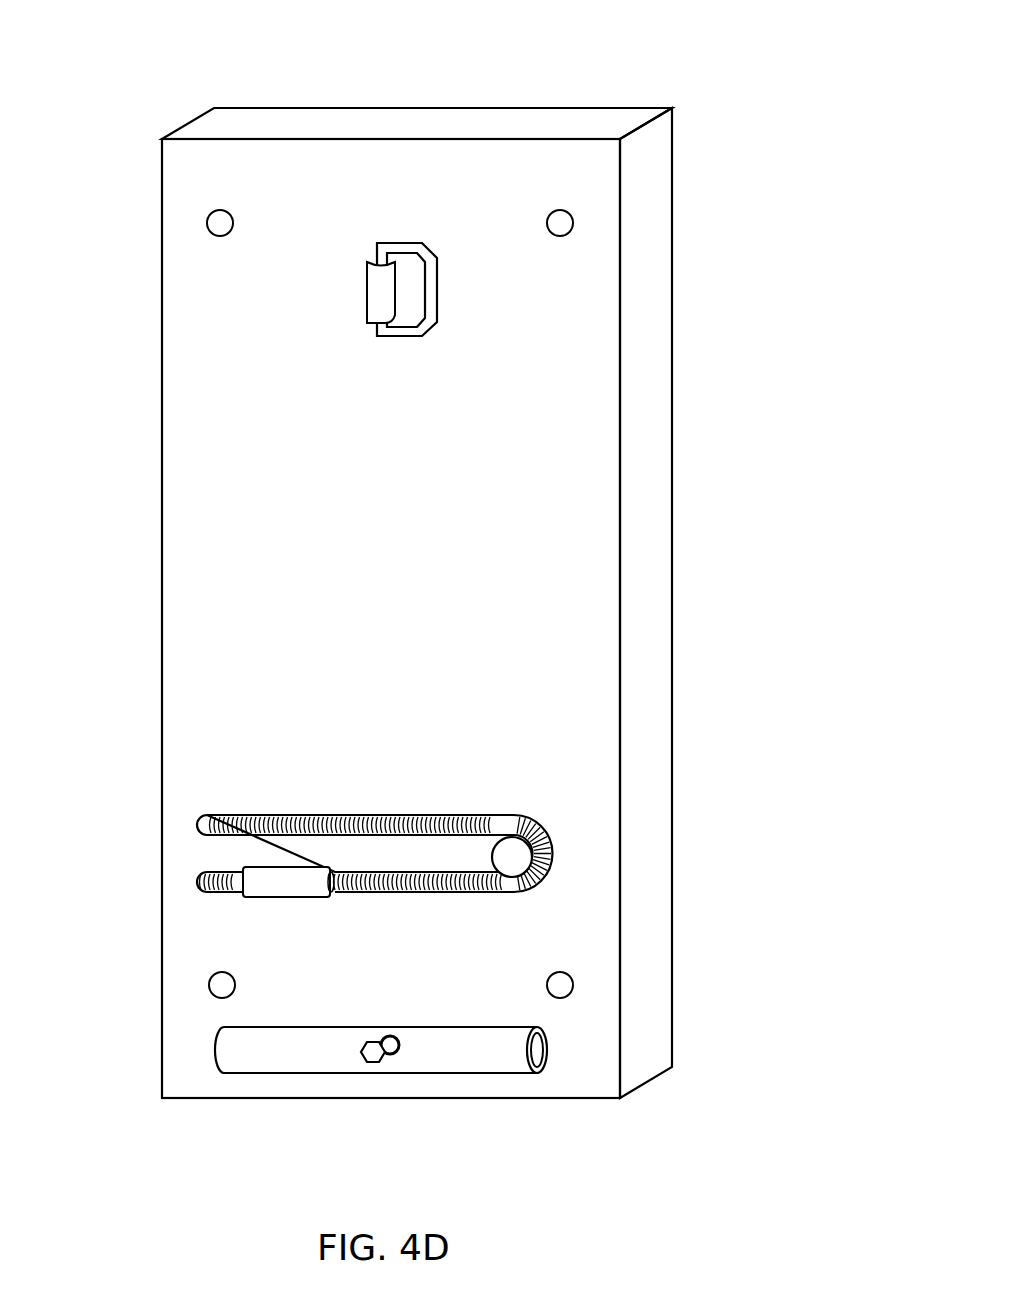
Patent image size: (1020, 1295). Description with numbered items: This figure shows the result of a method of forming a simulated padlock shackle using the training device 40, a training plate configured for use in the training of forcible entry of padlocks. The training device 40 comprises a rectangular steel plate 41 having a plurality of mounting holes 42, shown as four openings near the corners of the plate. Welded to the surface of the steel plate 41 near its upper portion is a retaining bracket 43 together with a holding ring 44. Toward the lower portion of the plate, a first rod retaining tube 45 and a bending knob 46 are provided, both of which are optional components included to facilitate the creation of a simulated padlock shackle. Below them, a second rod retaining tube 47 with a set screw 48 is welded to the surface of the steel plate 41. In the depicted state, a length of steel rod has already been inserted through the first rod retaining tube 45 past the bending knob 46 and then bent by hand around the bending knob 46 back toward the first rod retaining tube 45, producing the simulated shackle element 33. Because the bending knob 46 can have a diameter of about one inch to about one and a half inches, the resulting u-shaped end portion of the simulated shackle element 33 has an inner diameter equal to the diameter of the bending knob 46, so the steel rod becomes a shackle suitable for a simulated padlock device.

The training device 40 is at (750, 83).
The rectangular steel plate 41 is at (592, 322).
The mounting holes 42 is at (207, 223).
The retaining bracket 43 is at (379, 313).
The holding ring 44 is at (437, 308).
The simulated shackle element 33 is at (415, 815).
The first rod retaining tube 45 is at (303, 870).
The bending knob 46 is at (510, 843).
The second rod retaining tube 47 is at (310, 1043).
The set screw 48 is at (370, 1063).